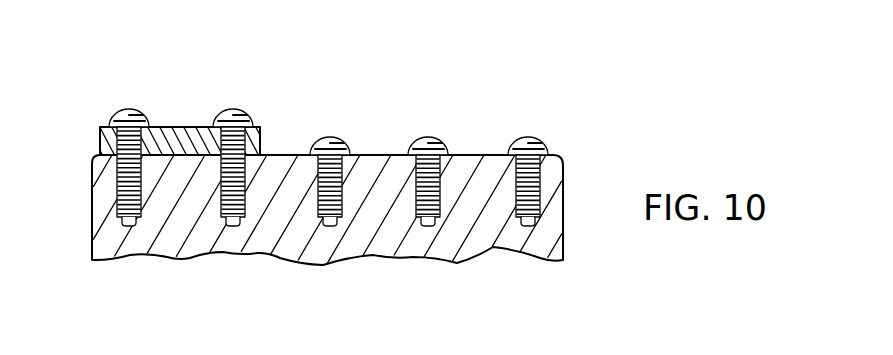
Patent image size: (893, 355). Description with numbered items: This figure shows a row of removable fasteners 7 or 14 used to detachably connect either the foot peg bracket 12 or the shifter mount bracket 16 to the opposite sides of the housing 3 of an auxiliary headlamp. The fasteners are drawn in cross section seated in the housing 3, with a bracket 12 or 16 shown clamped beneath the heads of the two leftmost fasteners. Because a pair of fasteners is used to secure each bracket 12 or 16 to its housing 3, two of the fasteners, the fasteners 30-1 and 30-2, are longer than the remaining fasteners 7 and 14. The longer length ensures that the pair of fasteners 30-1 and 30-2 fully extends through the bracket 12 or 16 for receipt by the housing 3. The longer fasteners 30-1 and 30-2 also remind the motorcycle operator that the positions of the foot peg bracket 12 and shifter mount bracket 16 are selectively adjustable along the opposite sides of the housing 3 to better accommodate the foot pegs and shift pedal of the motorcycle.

The housing 3 is at (328, 258).
The foot peg bracket 12 is at (180, 104).
The shifter mount bracket 16 is at (180, 128).
The removable fasteners 7 is at (457, 161).
The removable fasteners 14 is at (326, 136).
The longer fastener 30-1 is at (117, 209).
The longer fastener 30-2 is at (217, 212).